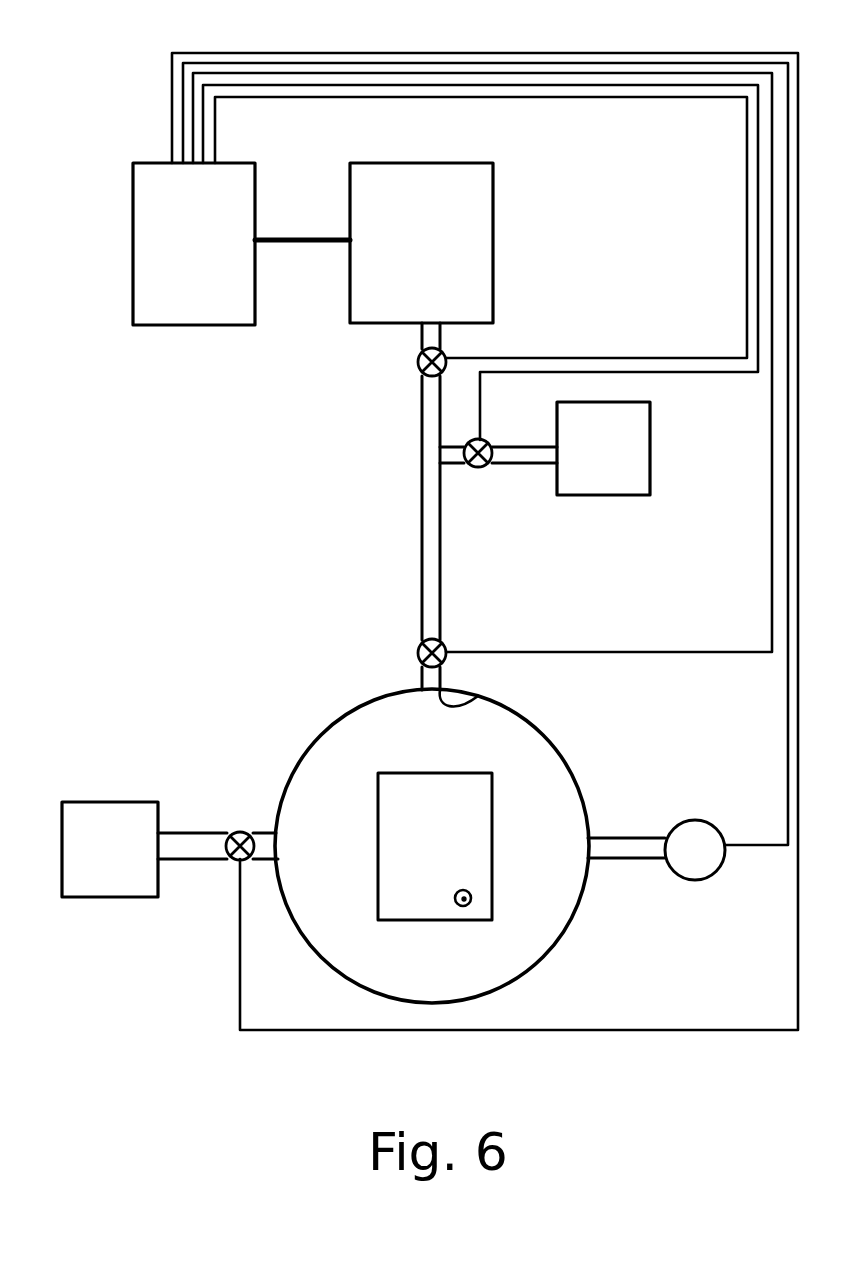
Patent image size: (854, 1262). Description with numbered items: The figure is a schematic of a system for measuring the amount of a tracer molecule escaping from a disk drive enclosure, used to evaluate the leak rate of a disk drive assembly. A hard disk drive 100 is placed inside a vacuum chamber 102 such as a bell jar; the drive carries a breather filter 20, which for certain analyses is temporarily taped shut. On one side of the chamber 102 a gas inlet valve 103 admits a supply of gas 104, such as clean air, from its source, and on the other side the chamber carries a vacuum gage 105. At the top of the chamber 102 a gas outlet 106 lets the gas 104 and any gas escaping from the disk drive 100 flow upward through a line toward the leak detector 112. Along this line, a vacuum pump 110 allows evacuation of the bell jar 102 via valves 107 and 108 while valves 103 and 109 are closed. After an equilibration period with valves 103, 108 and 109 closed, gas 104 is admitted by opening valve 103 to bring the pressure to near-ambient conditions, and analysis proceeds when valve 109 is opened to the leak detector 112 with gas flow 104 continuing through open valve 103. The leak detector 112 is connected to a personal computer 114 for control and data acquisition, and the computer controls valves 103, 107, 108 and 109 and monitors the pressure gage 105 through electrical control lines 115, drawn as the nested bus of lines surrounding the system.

The breather filter 20 is at (472, 898).
The hard disk drive 100 is at (460, 847).
The vacuum chamber 102 is at (400, 753).
The gas inlet valve 103 is at (250, 786).
The supply of gas 104 is at (140, 869).
The vacuum gage 105 is at (656, 850).
The gas outlet 106 is at (468, 703).
The valve 107 is at (419, 645).
The valve 108 is at (482, 467).
The valve 109 is at (418, 353).
The vacuum pump 110 is at (636, 469).
The leak detector 112 is at (448, 263).
The personal computer 114 is at (236, 266).
The electrical control lines 115 is at (593, 53).